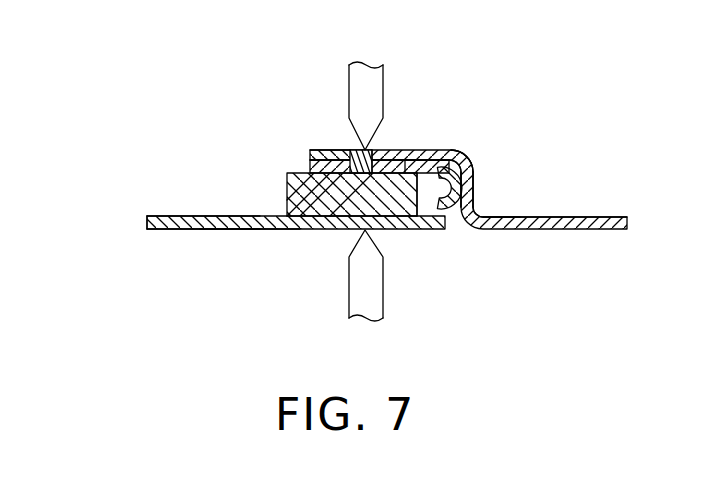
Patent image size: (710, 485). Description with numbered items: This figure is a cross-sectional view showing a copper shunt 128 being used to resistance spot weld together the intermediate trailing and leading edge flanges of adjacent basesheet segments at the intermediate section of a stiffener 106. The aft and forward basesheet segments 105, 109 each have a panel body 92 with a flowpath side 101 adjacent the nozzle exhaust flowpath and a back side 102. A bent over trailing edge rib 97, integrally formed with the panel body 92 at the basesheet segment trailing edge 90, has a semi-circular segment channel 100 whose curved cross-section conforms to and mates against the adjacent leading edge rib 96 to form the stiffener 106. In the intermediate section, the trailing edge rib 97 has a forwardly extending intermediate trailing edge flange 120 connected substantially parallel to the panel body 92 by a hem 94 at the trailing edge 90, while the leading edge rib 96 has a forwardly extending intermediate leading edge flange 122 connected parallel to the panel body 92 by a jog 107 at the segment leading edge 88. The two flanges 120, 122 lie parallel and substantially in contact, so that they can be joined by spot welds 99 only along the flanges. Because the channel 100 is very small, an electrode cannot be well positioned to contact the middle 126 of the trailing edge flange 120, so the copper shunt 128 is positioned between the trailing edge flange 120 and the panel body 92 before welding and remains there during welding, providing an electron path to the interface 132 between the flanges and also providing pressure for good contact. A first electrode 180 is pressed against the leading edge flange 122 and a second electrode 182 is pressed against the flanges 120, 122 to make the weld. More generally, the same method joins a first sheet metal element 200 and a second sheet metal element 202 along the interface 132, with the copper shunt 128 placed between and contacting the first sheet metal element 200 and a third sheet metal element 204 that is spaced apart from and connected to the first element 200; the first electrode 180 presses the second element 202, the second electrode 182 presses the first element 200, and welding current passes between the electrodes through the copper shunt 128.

The segment leading edge 88 is at (413, 205).
The basesheet segment trailing edge 90 is at (508, 217).
The panel body 92 is at (197, 215).
The hem 94 is at (462, 158).
The leading edge rib 96 is at (404, 160).
The bent over trailing edge rib 97 is at (473, 188).
The spot welds 99 is at (355, 150).
The segment channel 100 is at (430, 215).
The flowpath side 101 is at (168, 230).
The back side 102 is at (155, 216).
The aft basesheet segment 105 is at (612, 217).
The stiffener 106 is at (450, 140).
The jog 107 is at (468, 194).
The forward basesheet segment 109 is at (270, 231).
The intermediate trailing edge flange 120 is at (311, 167).
The intermediate leading edge flange 122 is at (310, 151).
The middle of the intermediate trailing edge flange 126 is at (345, 230).
The copper shunt 128 is at (288, 194).
The interface 132 is at (395, 152).
The first electrode 180 is at (362, 90).
The second electrode 182 is at (365, 304).
The first sheet metal element 200 is at (405, 160).
The second sheet metal element 202 is at (311, 159).
The third sheet metal element 204 is at (207, 222).